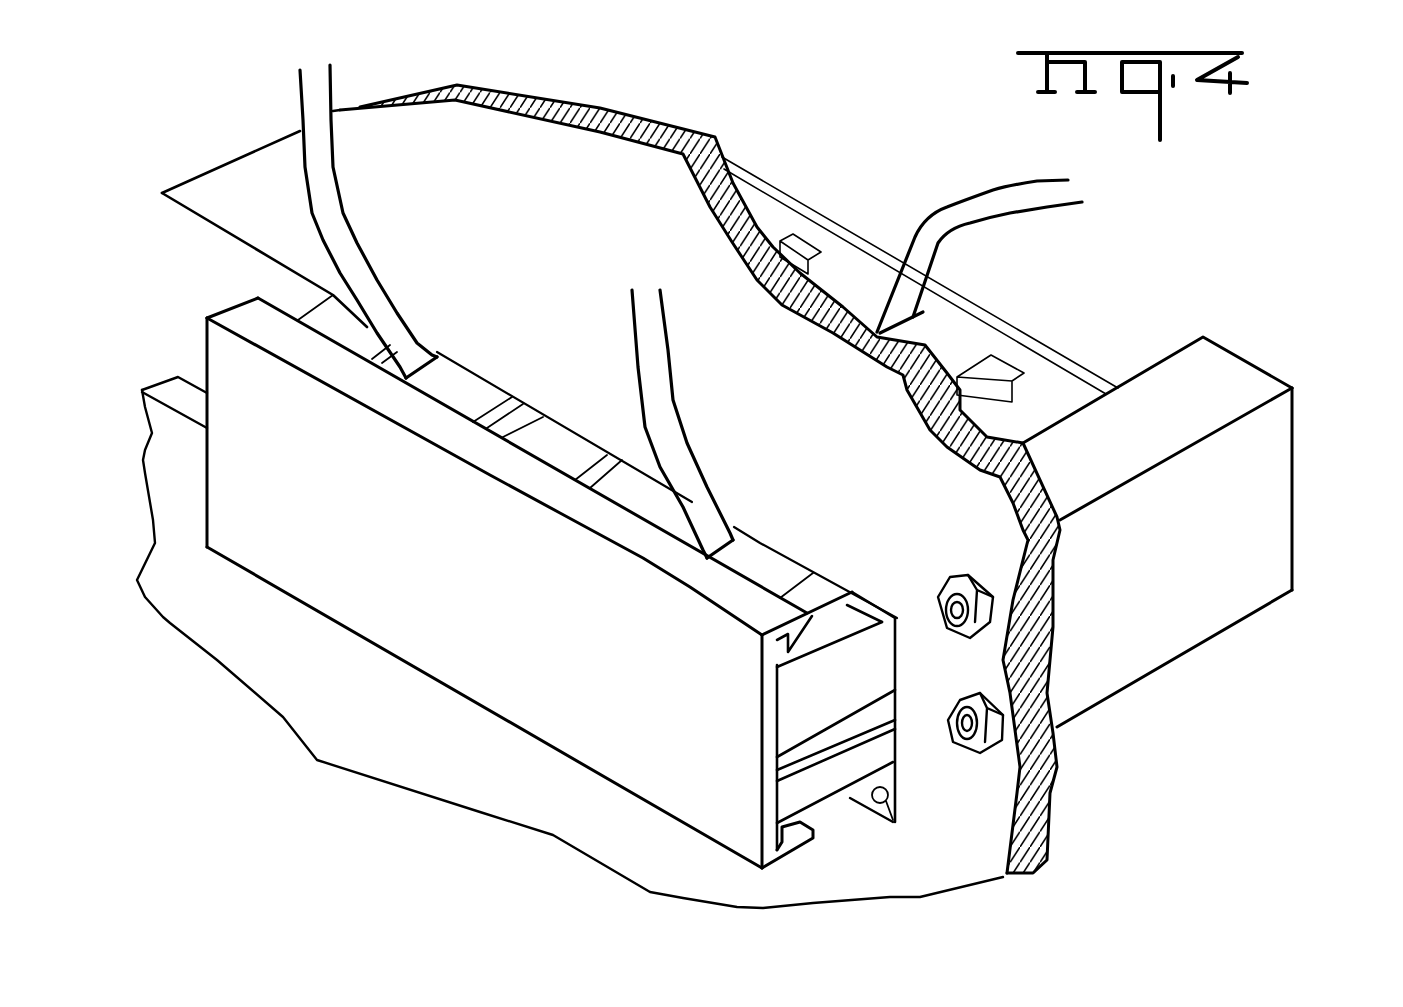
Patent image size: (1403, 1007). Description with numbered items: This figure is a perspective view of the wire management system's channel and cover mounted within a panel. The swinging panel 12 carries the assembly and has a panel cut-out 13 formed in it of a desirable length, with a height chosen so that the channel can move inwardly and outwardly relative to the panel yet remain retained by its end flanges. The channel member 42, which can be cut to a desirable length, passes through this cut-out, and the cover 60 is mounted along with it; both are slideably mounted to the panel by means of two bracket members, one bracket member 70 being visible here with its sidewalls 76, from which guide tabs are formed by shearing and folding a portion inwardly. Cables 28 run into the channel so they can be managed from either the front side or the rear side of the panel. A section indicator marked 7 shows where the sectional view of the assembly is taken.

The swinging panel 12 is at (548, 273).
The cables 28 is at (353, 280).
The cover 60 is at (492, 618).
The channel member 42 is at (857, 595).
The panel cut-out 13 is at (895, 820).
The sidewalls 76 is at (1152, 400).
The bracket member 70 is at (1120, 640).
The section line 7- 7 is at (1365, 445).